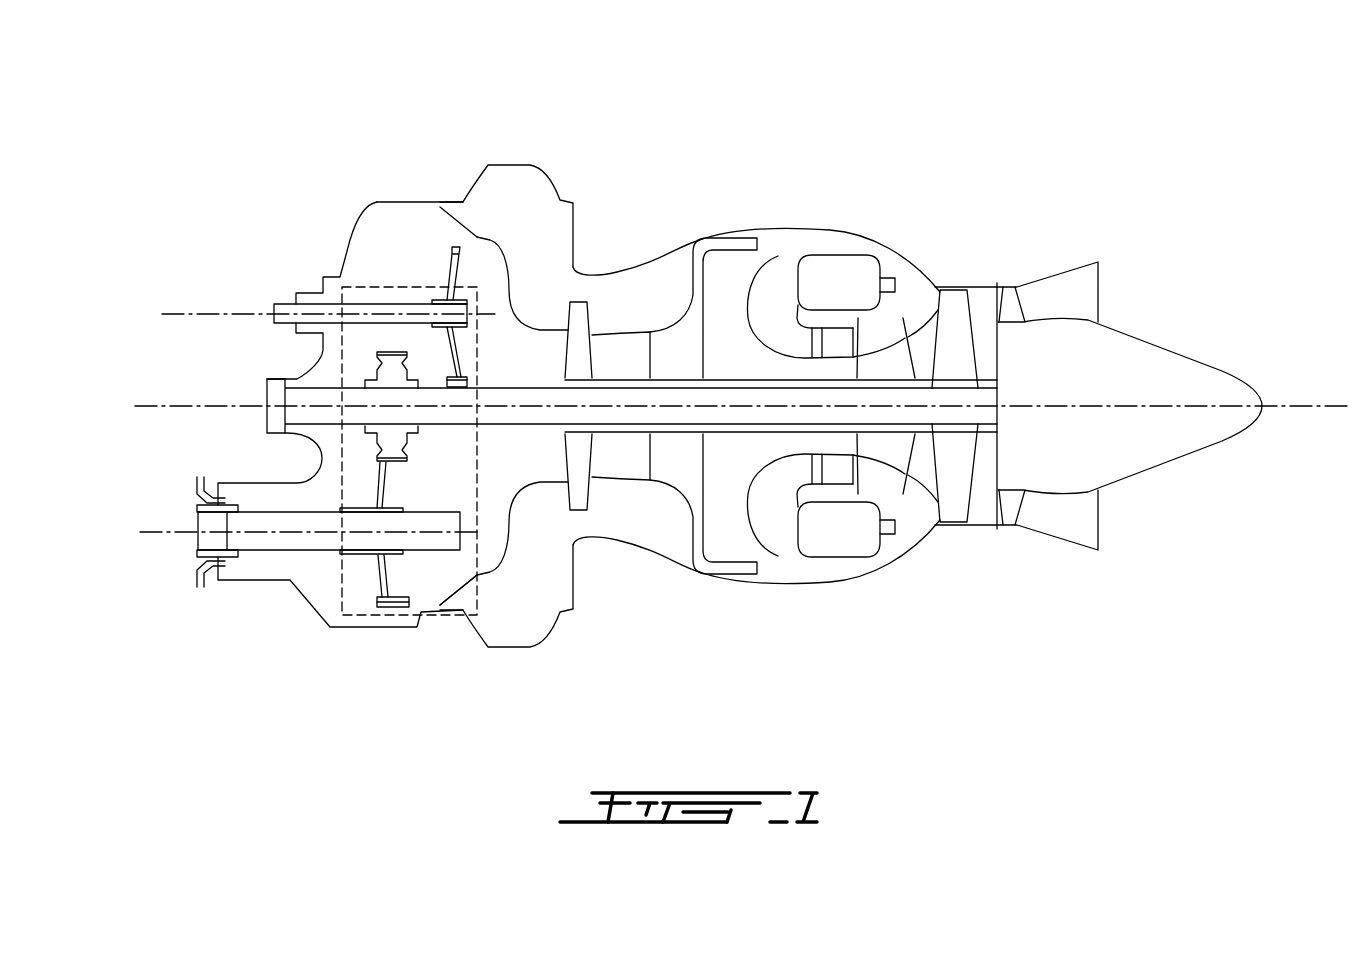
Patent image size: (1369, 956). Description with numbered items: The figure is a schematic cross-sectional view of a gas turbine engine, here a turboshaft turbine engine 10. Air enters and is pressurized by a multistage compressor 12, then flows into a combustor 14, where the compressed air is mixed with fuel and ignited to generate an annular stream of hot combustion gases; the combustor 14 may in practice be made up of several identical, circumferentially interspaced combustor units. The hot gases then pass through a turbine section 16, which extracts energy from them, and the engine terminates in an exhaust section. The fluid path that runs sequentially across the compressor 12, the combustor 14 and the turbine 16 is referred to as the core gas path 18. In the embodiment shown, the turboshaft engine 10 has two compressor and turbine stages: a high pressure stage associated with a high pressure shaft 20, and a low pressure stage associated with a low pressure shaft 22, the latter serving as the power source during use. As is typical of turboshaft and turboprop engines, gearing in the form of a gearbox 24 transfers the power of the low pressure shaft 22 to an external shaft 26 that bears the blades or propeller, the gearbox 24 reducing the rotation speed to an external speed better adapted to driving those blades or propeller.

The turbine engine 10 is at (1055, 184).
The multistage compressor 12 is at (643, 284).
The combustor 14 is at (842, 253).
The turbine section 16 is at (931, 291).
The core gas path 18 is at (739, 245).
The high pressure shaft 20 is at (798, 315).
The low pressure shaft 22 is at (763, 387).
The gearbox 24 is at (393, 287).
The external shaft 26 is at (248, 497).